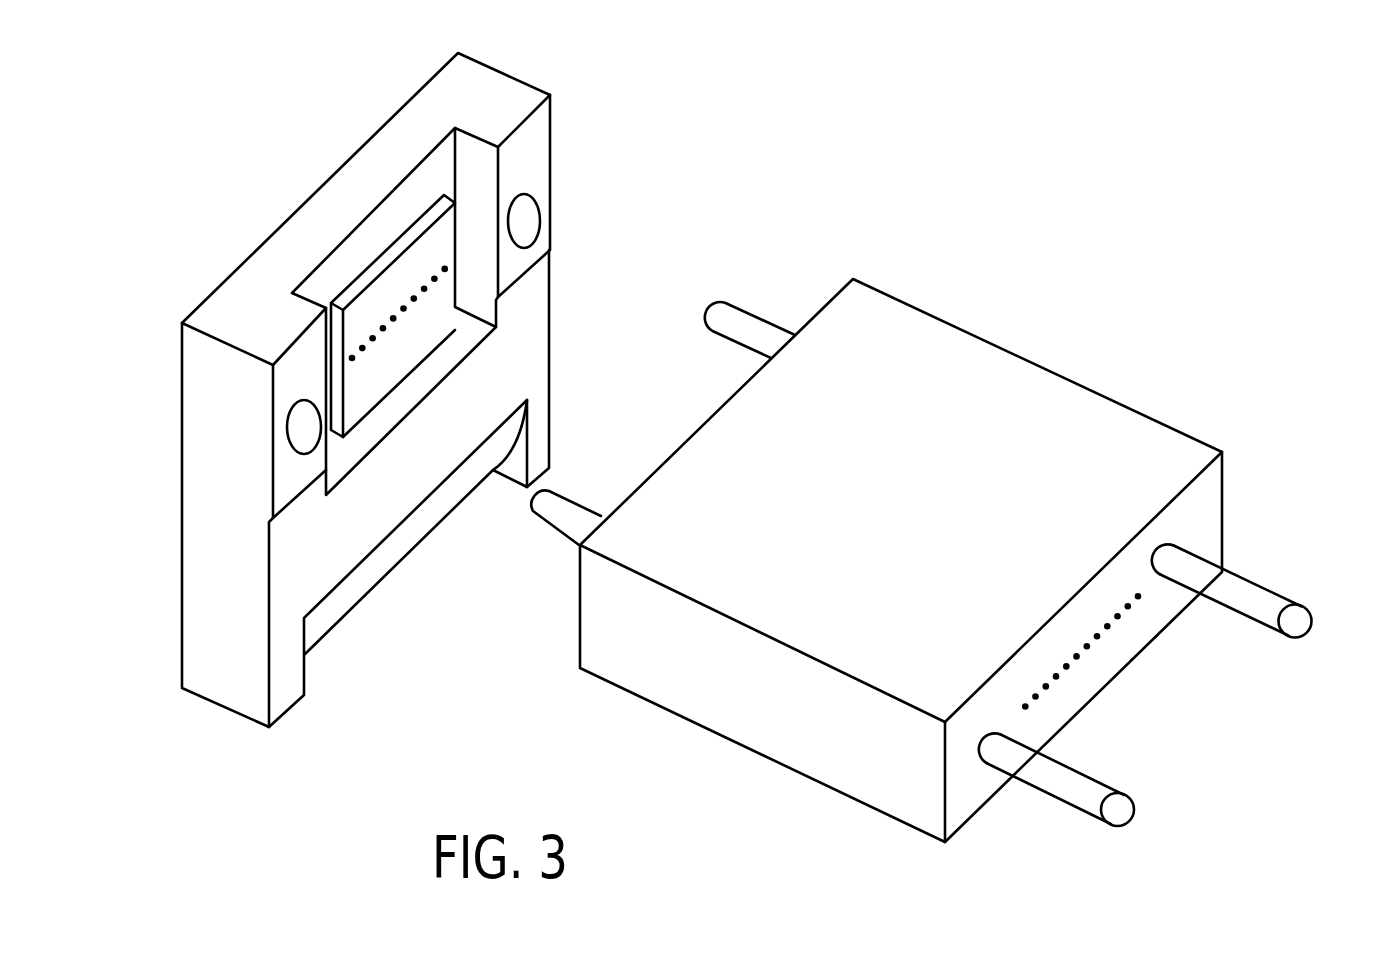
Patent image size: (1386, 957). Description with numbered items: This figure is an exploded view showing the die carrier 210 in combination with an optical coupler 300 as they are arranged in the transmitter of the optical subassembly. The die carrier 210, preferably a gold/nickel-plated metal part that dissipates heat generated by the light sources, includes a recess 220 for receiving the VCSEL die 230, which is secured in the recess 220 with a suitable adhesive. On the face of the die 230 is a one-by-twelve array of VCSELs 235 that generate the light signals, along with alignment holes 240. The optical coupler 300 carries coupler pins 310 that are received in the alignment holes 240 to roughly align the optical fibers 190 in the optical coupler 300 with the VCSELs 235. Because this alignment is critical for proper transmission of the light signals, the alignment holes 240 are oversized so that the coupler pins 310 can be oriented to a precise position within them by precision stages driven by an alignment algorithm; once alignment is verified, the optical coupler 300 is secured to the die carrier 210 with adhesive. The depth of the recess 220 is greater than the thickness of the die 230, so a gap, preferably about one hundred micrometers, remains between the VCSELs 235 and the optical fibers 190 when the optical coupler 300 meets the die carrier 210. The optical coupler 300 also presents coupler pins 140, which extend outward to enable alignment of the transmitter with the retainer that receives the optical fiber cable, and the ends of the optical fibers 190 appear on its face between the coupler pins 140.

The die carrier 210 is at (534, 373).
The recess 220 is at (479, 148).
The VCSEL die 230 is at (450, 338).
The VCSELs 235 is at (423, 288).
The alignment holes 240 is at (536, 219).
The optical coupler 300 is at (931, 520).
The coupler pins 310 is at (728, 314).
The coupler pins 140 is at (1259, 606).
The optical fibers 190 is at (1060, 672).